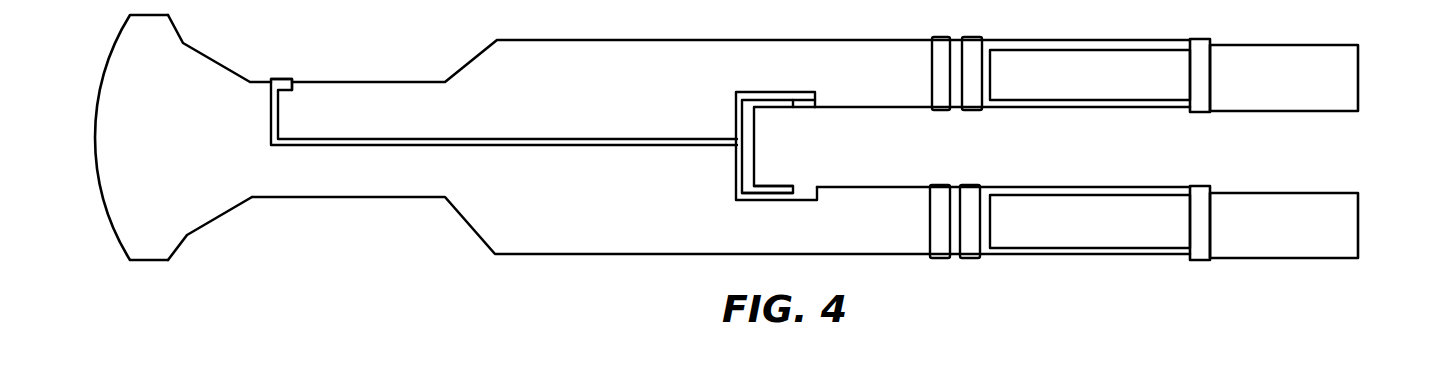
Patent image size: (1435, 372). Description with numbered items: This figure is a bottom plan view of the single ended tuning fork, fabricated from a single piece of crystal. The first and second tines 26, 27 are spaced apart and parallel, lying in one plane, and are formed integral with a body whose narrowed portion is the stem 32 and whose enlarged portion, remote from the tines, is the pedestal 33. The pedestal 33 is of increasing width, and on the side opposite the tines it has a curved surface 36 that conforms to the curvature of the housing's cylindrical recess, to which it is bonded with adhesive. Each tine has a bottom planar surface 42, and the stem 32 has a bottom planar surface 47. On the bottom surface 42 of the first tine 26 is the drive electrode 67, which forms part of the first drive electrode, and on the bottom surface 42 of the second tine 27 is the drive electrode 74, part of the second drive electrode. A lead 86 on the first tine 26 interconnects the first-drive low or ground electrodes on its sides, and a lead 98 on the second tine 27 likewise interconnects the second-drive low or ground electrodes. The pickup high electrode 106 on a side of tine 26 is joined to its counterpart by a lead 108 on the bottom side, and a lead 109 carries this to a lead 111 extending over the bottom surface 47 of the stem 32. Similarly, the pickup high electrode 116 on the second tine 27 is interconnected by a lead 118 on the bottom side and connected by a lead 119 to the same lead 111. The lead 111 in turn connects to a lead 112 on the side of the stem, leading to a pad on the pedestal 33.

The first tine 26 is at (1262, 207).
The second tine 27 is at (1298, 53).
The stem 32 is at (436, 197).
The pedestal 33 is at (148, 240).
The curved surface 36 is at (98, 107).
The bottom planar surface 42 is at (908, 88).
The bottom planar surface of stem 47 is at (402, 182).
The drive electrode 67 is at (1180, 232).
The drive electrode 74 is at (1090, 92).
The lead 86 is at (970, 202).
The lead 98 is at (970, 50).
The pickup high electrode 106 is at (800, 193).
The lead 108 is at (937, 198).
The lead 109 is at (775, 200).
The lead 111 is at (532, 143).
The lead 112 is at (278, 88).
The pickup high electrode 116 is at (810, 103).
The lead 118 is at (940, 62).
The lead 119 is at (753, 93).